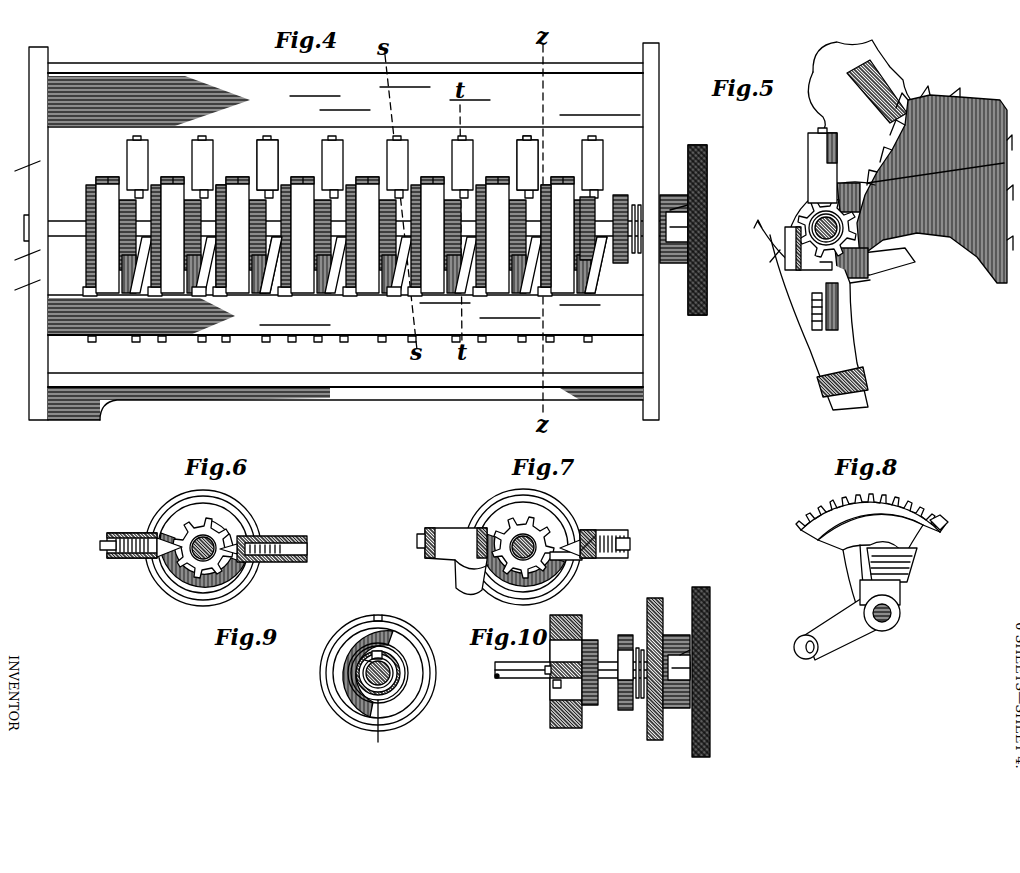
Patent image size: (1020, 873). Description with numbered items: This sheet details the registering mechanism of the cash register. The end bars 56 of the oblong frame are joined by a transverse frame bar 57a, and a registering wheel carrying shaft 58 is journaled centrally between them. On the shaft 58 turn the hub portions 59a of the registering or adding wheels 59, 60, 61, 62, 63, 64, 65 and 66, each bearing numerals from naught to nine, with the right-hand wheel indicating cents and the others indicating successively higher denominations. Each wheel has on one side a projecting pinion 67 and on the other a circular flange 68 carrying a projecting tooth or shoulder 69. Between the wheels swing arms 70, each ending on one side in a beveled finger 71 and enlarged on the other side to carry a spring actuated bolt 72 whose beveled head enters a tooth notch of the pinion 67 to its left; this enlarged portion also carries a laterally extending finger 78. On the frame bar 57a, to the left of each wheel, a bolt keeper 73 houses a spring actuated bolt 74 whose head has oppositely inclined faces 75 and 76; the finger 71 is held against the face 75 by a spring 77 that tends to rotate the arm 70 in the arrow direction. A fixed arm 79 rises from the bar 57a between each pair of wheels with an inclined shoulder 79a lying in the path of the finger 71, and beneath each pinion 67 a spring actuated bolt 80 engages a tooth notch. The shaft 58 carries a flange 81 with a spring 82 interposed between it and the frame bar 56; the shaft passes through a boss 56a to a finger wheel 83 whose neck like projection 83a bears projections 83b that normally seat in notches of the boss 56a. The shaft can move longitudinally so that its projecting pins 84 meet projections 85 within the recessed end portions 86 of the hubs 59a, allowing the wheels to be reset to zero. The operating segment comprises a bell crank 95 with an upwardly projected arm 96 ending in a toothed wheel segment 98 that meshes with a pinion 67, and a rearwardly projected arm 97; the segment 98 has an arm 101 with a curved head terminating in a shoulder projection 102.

In FIG. 4, the end bar 56 is at (625, 328).
In FIG. 10, the end bar 56 is at (655, 669).
In FIG. 4, the boss 56a is at (672, 195).
In FIG. 10, the boss 56a is at (672, 635).
In FIG. 4, the transverse frame bar 57a is at (630, 333).
In FIG. 4, the registering wheel carrying shaft 58 is at (356, 228).
In FIG. 5, the registering wheel carrying shaft 58 is at (863, 222).
In FIG. 6, the registering wheel carrying shaft 58 is at (190, 560).
In FIG. 7, the registering wheel carrying shaft 58 is at (520, 540).
In FIG. 9, the registering wheel carrying shaft 58 is at (366, 690).
In FIG. 4, the registering wheel 59 is at (577, 177).
In FIG. 10, the registering wheel 59 is at (575, 615).
In FIG. 9, the hub portion 59a is at (395, 678).
In FIG. 10, the hub portion 59a is at (545, 661).
In FIG. 4, the registering wheel 60 is at (492, 178).
In FIG. 4, the registering wheel 61 is at (428, 178).
In FIG. 4, the registering wheel 62 is at (366, 178).
In FIG. 4, the registering wheel 63 is at (300, 178).
In FIG. 4, the registering wheel 64 is at (232, 185).
In FIG. 4, the registering wheel 65 is at (174, 176).
In FIG. 4, the registering wheel 66 is at (110, 177).
In FIG. 4, the pinion 67 is at (592, 200).
In FIG. 5, the pinion 67 is at (809, 222).
In FIG. 6, the pinion 67 is at (196, 566).
In FIG. 7, the pinion 67 is at (546, 540).
In FIG. 4, the circular flange 68 is at (551, 178).
In FIG. 6, the circular flange 68 is at (178, 510).
In FIG. 7, the circular flange 68 is at (523, 547).
In FIG. 9, the circular flange 68 is at (408, 640).
In FIG. 10, the circular flange 68 is at (552, 625).
In FIG. 4, the tooth 69 is at (218, 184).
In FIG. 5, the tooth 69 is at (831, 230).
In FIG. 6, the tooth 69 is at (240, 594).
In FIG. 7, the tooth 69 is at (576, 572).
In FIG. 9, the tooth 69 is at (383, 617).
In FIG. 4, the arm 70 is at (280, 152).
In FIG. 5, the arm 70 is at (808, 158).
In FIG. 6, the arm 70 is at (107, 555).
In FIG. 7, the arm 70 is at (425, 533).
In FIG. 4, the finger 71 is at (210, 283).
In FIG. 5, the finger 71 is at (868, 275).
In FIG. 7, the finger 71 is at (572, 557).
In FIG. 4, the spring actuated bolt 72 is at (525, 135).
In FIG. 5, the spring actuated bolt 72 is at (818, 130).
In FIG. 6, the spring actuated bolt 72 is at (128, 560).
In FIG. 7, the spring actuated bolt 72 is at (417, 542).
In FIG. 5, the bolt keeper 73 is at (838, 312).
In FIG. 5, the spring actuated bolt 74 is at (815, 305).
In FIG. 7, the spring actuated bolt 74 is at (630, 543).
In FIG. 5, the inclined face 75 is at (800, 282).
In FIG. 7, the inclined face 75 is at (630, 556).
In FIG. 5, the inclined face 76 is at (810, 290).
In FIG. 7, the inclined face 76 is at (590, 531).
In FIG. 5, the spring 77 is at (880, 262).
In FIG. 5, the laterally extending finger 78 is at (943, 167).
In FIG. 6, the laterally extending finger 78 is at (150, 576).
In FIG. 7, the laterally extending finger 78 is at (456, 568).
In FIG. 5, the fixed arm 79 is at (795, 275).
In FIG. 4, the inclined shoulder 79a is at (276, 252).
In FIG. 5, the inclined shoulder 79a is at (790, 246).
In FIG. 4, the spring actuated bolt 80 is at (266, 342).
In FIG. 6, the spring actuated bolt 80 is at (292, 562).
In FIG. 4, the flange 81 is at (626, 200).
In FIG. 10, the flange 81 is at (624, 710).
In FIG. 4, the spring 82 is at (636, 255).
In FIG. 10, the spring 82 is at (638, 648).
In FIG. 4, the finger wheel 83 is at (707, 152).
In FIG. 5, the finger wheel 83 is at (711, 226).
In FIG. 10, the finger wheel 83 is at (710, 592).
In FIG. 4, the neck like projection 83a is at (688, 205).
In FIG. 10, the neck like projection 83a is at (690, 650).
In FIG. 4, the projections 83b is at (671, 227).
In FIG. 10, the projections 83b is at (672, 668).
In FIG. 9, the projecting pin 84 is at (395, 665).
In FIG. 10, the projecting pin 84 is at (548, 674).
In FIG. 9, the projection 85 is at (365, 660).
In FIG. 9, the recessed end portion 86 is at (377, 730).
In FIG. 10, the recessed end portion 86 is at (553, 688).
In FIG. 8, the bell crank 95 is at (855, 600).
In FIG. 8, the upwardly projected arm 96 is at (896, 584).
In FIG. 8, the rearwardly projected arm 97 is at (840, 645).
In FIG. 5, the toothed wheel segment 98 is at (968, 105).
In FIG. 8, the toothed wheel segment 98 is at (905, 502).
In FIG. 8, the arm 101 is at (905, 551).
In FIG. 8, the shoulder projection 102 is at (942, 523).